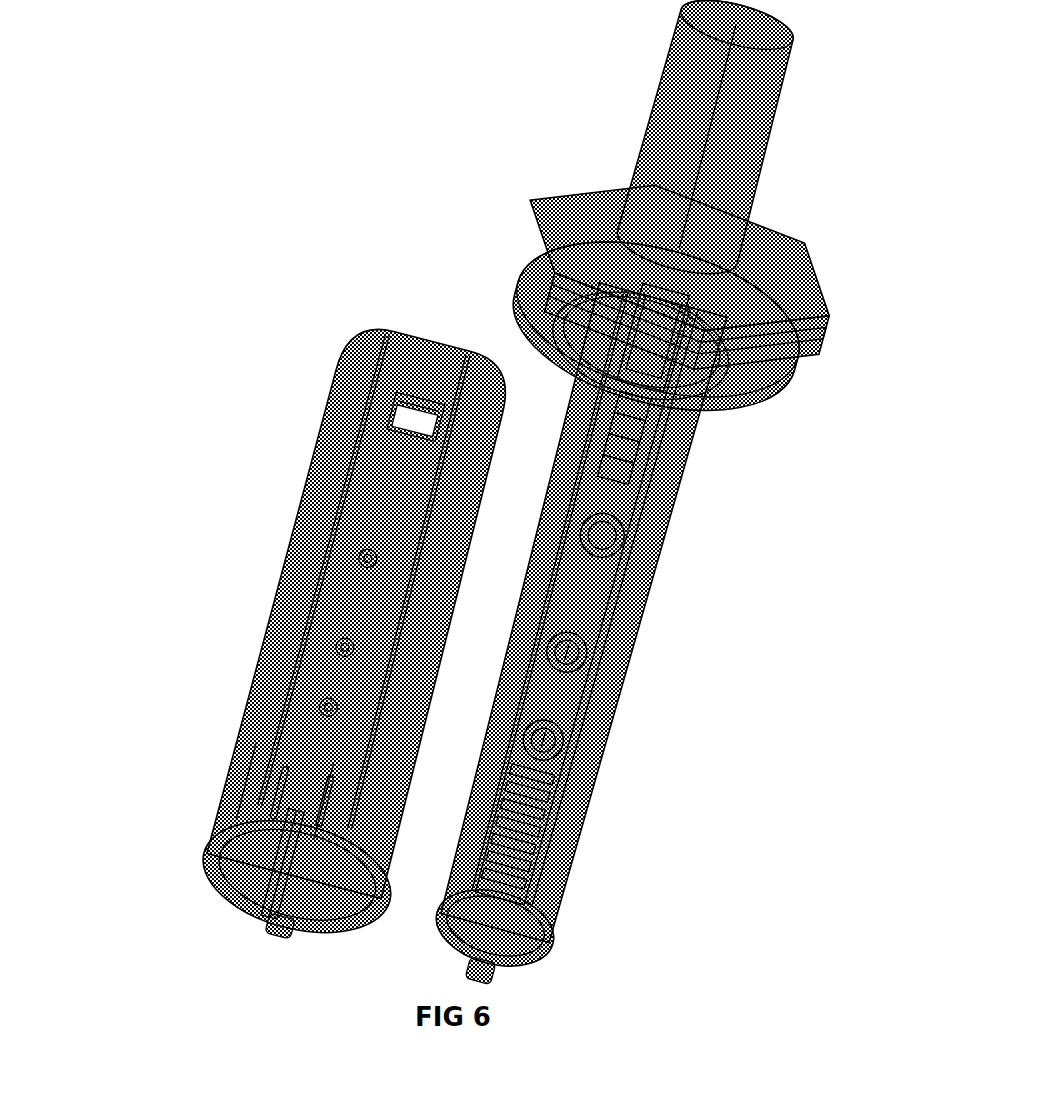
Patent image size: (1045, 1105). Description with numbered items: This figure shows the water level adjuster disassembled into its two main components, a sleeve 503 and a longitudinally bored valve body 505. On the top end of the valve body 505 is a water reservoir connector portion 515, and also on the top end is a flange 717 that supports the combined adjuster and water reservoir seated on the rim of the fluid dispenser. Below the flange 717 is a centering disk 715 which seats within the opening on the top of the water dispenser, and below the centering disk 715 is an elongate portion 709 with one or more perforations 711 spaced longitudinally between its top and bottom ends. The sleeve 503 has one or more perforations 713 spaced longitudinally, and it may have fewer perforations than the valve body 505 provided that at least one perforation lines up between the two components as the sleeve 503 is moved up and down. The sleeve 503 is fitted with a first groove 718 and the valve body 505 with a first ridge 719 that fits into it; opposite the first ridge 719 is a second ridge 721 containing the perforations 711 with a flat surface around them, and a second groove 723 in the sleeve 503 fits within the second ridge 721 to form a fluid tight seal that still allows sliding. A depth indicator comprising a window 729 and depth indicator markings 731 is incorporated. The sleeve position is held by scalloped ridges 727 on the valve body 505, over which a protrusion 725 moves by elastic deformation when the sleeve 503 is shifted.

The sleeve 503 is at (213, 481).
The valve body 505 is at (651, 533).
The water reservoir connector portion 515 is at (763, 120).
The elongate portion 709 is at (680, 520).
The perforations 711 is at (563, 740).
The perforations 713 is at (363, 558).
The centering disk 715 is at (653, 250).
The flange 717 is at (546, 283).
The first groove 718 is at (266, 918).
The first ridge 719 is at (506, 962).
The second ridge 721 is at (657, 338).
The second groove 723 is at (288, 827).
The protrusion 725 is at (308, 797).
The scalloped ridges 727 is at (525, 832).
The window 729 is at (408, 432).
The depth indicator markings 731 is at (654, 430).